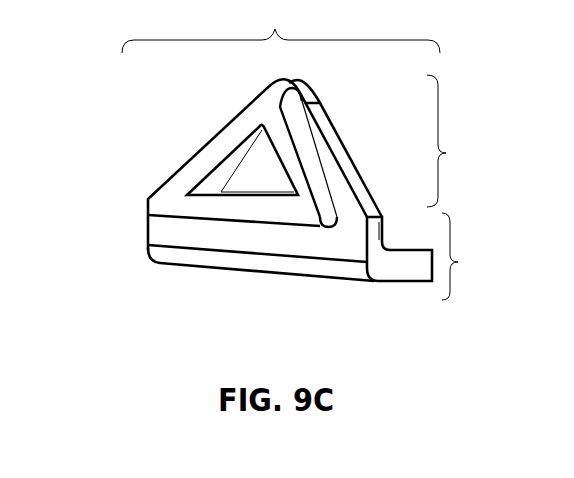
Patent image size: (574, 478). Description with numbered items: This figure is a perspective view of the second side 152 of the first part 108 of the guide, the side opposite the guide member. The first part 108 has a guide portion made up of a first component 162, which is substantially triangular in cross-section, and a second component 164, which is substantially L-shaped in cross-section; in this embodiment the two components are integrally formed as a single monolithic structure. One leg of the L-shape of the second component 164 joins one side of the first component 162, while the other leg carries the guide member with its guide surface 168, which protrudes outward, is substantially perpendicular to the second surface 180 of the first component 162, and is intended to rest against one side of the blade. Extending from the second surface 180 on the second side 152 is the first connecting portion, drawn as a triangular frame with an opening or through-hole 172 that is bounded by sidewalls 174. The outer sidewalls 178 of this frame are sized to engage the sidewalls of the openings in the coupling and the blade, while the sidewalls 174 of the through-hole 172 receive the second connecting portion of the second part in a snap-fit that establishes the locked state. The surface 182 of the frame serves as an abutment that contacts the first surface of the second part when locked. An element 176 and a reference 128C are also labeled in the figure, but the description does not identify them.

The first part 108 is at (281, 30).
The second side 152 is at (132, 119).
The surface 182 is at (232, 133).
The sidewalls 174 is at (233, 165).
The through-hole 172 is at (276, 188).
The outer side wall 176 is at (342, 150).
The outer sidewalls 178 is at (297, 142).
The second surface 180 is at (348, 217).
The first component 162 is at (458, 141).
The second component 164 is at (322, 256).
The guide surface 168 is at (400, 283).
The insertion direction 128C is at (213, 232).